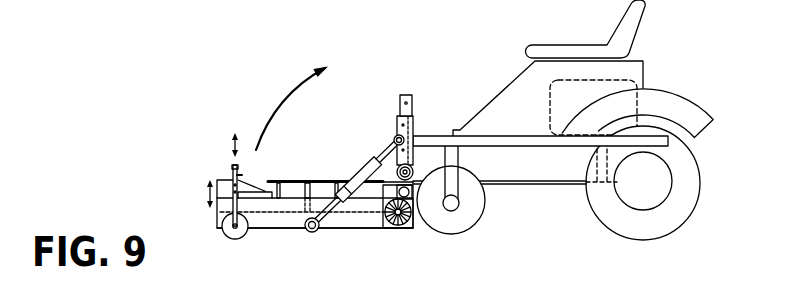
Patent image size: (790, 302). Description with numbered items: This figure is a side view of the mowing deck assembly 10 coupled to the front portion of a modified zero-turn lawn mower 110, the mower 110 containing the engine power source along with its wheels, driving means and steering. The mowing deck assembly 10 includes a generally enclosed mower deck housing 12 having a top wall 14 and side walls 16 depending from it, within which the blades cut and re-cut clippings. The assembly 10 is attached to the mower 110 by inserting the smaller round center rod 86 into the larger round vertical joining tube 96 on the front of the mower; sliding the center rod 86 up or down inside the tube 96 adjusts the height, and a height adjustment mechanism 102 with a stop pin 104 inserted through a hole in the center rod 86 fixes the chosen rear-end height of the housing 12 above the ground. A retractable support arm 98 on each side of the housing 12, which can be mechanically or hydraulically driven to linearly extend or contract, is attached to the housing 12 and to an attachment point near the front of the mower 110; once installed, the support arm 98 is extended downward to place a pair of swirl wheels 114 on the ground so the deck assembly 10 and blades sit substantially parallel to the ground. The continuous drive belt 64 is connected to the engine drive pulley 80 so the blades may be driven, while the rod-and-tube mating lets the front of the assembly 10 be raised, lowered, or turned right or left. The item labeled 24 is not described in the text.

The mowing deck assembly 10 is at (264, 79).
The mower deck housing 12 is at (268, 236).
The top wall 14 is at (283, 199).
The side walls 16 is at (355, 223).
The engine 24 is at (636, 82).
The continuous drive belt 64 is at (523, 185).
The engine drive pulley 80 is at (600, 183).
The center rod 86 is at (405, 95).
The vertical joining tube 96 is at (414, 139).
The retractable support arm 98 is at (352, 177).
The height adjustment mechanism 102 is at (387, 114).
The stop pin 104 is at (413, 117).
The zero-turn lawn mower 110 is at (516, 65).
The swirl wheels 114 is at (231, 232).